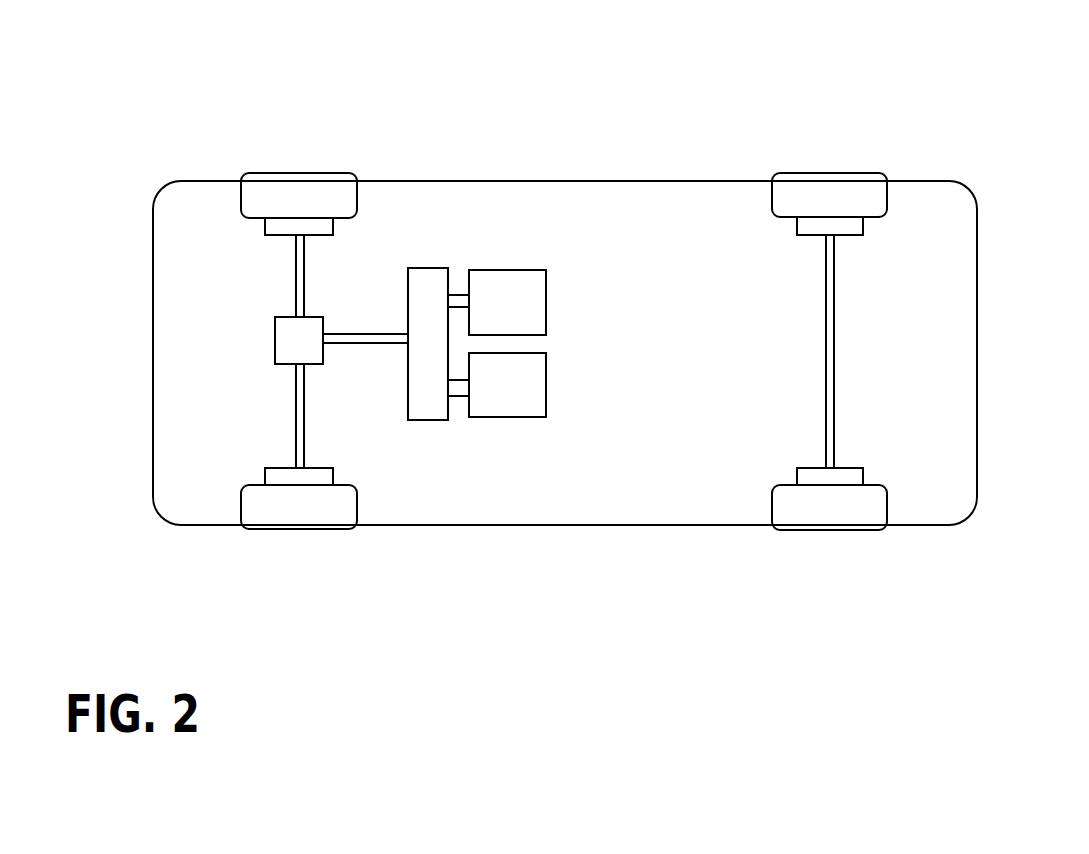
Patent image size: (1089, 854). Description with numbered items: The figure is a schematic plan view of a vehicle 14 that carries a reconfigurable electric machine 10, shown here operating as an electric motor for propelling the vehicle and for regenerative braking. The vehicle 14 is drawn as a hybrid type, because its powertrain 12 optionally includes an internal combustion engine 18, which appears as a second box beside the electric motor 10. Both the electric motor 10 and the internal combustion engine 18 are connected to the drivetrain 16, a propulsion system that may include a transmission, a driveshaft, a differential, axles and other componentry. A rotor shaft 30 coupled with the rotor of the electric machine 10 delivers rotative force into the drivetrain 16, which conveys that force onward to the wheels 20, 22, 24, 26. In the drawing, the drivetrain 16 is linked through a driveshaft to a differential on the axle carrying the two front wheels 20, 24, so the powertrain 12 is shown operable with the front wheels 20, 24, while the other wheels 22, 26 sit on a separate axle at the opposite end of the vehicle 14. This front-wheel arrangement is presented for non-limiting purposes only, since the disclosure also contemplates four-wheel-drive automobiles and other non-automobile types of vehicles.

The electric machine 10 is at (493, 320).
The powertrain 12 is at (733, 198).
The vehicle 14 is at (986, 89).
The drivetrain 16 is at (390, 288).
The internal combustion engine 18 is at (493, 395).
The wheel 20 is at (313, 173).
The wheel 22 is at (848, 173).
The wheel 24 is at (313, 529).
The wheel 26 is at (830, 530).
The rotor shaft 30 is at (458, 295).